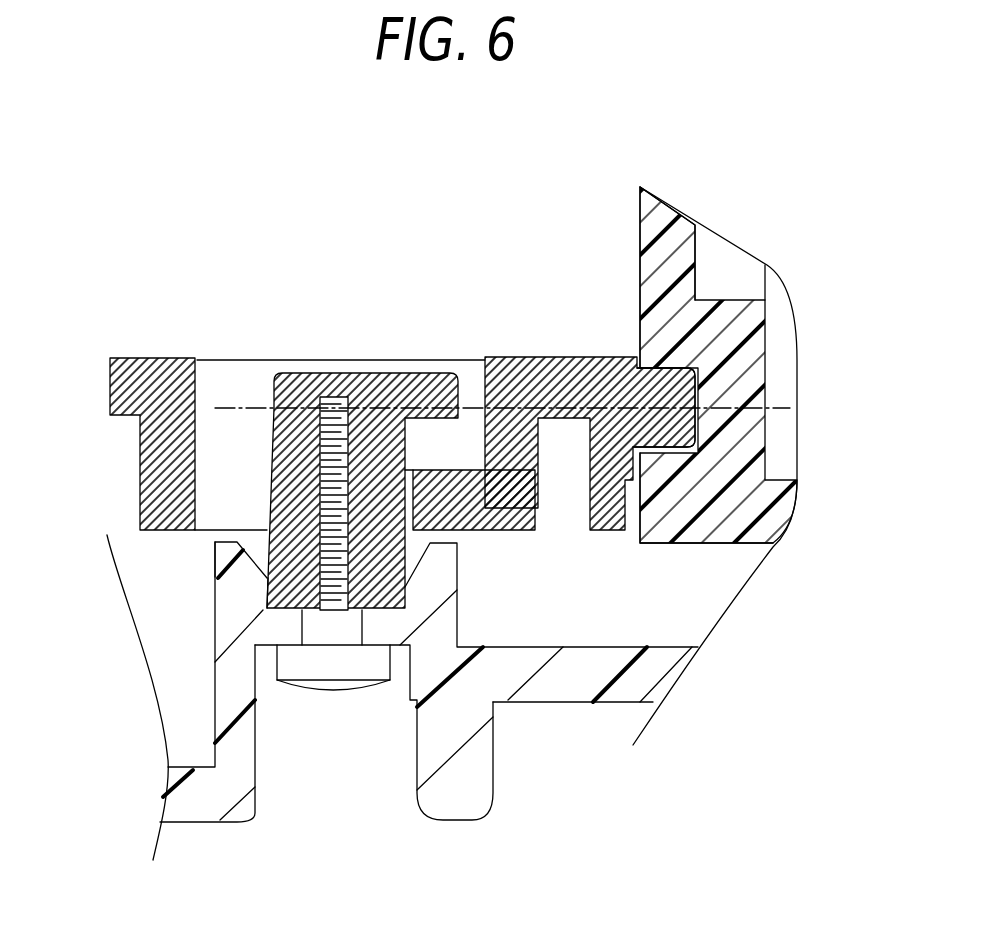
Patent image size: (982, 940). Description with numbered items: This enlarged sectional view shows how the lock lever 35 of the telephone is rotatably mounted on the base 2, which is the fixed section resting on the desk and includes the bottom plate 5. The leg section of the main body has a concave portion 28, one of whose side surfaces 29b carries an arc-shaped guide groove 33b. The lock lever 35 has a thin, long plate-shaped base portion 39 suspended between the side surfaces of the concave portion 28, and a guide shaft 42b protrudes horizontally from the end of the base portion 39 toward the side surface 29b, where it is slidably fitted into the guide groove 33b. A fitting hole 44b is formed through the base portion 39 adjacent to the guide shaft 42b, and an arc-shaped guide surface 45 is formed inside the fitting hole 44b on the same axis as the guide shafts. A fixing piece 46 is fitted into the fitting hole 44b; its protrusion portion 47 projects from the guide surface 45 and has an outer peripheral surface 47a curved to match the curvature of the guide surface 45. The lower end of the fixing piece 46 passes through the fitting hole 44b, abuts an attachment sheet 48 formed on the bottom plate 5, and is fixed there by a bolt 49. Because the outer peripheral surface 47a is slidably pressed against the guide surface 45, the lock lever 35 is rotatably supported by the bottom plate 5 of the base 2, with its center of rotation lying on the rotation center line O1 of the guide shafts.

The base 2 is at (712, 682).
The bottom plate 5 is at (562, 693).
The concave portion 28 is at (640, 228).
The side surface 29b is at (643, 260).
The guide groove 33b is at (672, 363).
The lock lever 35 is at (538, 345).
The base portion 39 is at (110, 382).
The guide shaft 42b is at (697, 387).
The fitting hole 44b is at (200, 388).
The guide surface 45 is at (450, 477).
The fixing piece 46 is at (267, 578).
The protrusion portion 47 is at (453, 373).
The outer peripheral surface 47a is at (380, 373).
The attachment sheet 48 is at (226, 554).
The bolt 49 is at (335, 630).
The rotation center line O1 is at (249, 408).